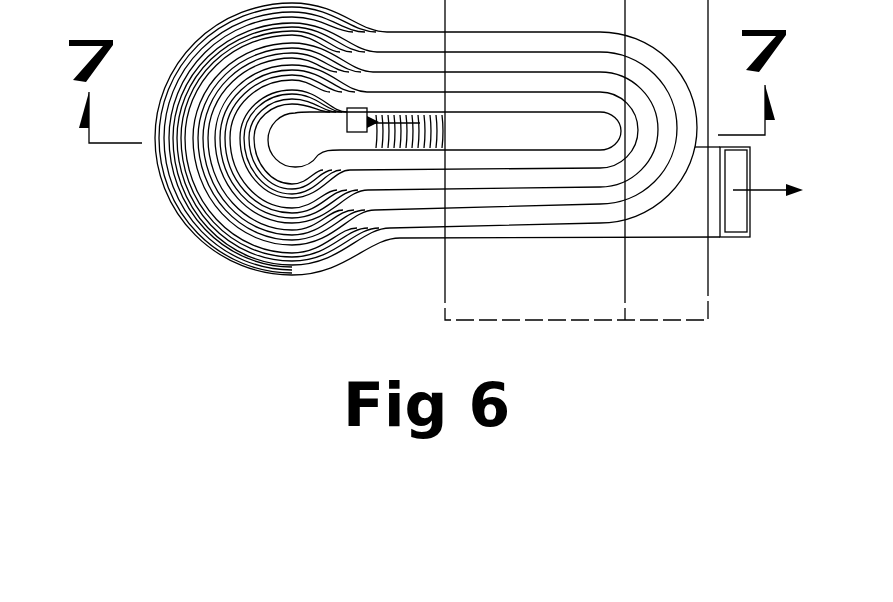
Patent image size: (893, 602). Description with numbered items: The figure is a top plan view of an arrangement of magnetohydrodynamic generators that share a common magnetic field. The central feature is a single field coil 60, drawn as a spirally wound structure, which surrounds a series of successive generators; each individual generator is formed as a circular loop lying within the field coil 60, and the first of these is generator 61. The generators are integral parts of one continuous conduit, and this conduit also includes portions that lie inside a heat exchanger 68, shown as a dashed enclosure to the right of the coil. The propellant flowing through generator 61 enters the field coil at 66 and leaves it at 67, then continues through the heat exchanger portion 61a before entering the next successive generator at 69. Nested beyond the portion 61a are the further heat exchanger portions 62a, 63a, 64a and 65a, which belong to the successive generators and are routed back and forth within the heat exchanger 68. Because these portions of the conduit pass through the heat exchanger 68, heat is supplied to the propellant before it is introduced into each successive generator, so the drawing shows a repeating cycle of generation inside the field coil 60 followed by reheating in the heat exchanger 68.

The field coil 60 is at (193, 218).
The generator 61 is at (266, 143).
The heat exchanger portion 61a is at (504, 154).
The heat exchanger portion 62a is at (494, 140).
The heat exchanger portion 63a is at (513, 139).
The heat exchanger portion 64a is at (526, 138).
The heat exchanger portion 65a is at (580, 238).
The coil entry point 66 is at (334, 121).
The coil exit point 67 is at (318, 152).
The heat exchanger 68 is at (586, 322).
The next generator entry point 69 is at (358, 101).